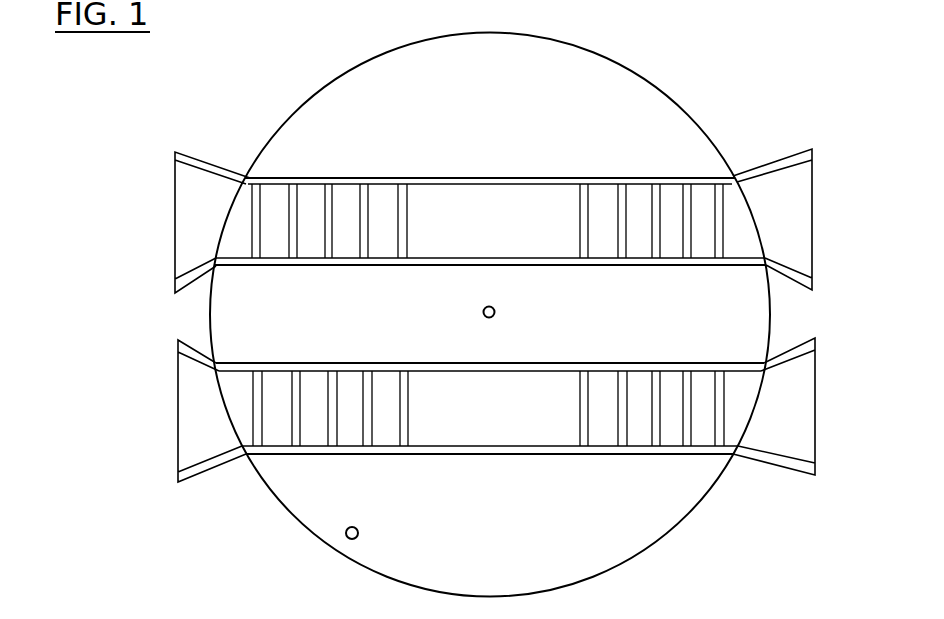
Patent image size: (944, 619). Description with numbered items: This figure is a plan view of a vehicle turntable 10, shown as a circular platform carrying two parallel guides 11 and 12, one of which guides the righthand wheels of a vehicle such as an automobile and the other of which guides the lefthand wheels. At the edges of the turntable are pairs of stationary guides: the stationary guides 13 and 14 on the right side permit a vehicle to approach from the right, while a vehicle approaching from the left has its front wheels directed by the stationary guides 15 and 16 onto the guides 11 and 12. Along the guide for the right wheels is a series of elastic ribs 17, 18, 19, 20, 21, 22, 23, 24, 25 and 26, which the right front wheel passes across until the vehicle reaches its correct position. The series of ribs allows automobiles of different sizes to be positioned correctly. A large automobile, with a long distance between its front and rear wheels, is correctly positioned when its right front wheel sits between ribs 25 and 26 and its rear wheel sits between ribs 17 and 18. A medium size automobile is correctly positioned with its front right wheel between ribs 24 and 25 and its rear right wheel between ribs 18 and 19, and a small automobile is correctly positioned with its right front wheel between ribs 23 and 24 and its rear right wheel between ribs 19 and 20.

The turntable 10 is at (598, 60).
The guide 11 is at (673, 173).
The guide 12 is at (705, 447).
The stationary guide 13 is at (800, 150).
The stationary guide 14 is at (800, 343).
The stationary guide 15 is at (186, 158).
The stationary guide 16 is at (186, 345).
The elastic rib 17 is at (262, 390).
The elastic rib 18 is at (297, 385).
The elastic rib 19 is at (335, 382).
The elastic rib 20 is at (370, 383).
The elastic rib 21 is at (407, 383).
The elastic rib 22 is at (580, 382).
The elastic rib 23 is at (618, 382).
The elastic rib 24 is at (652, 382).
The elastic rib 25 is at (683, 382).
The elastic rib 26 is at (718, 373).